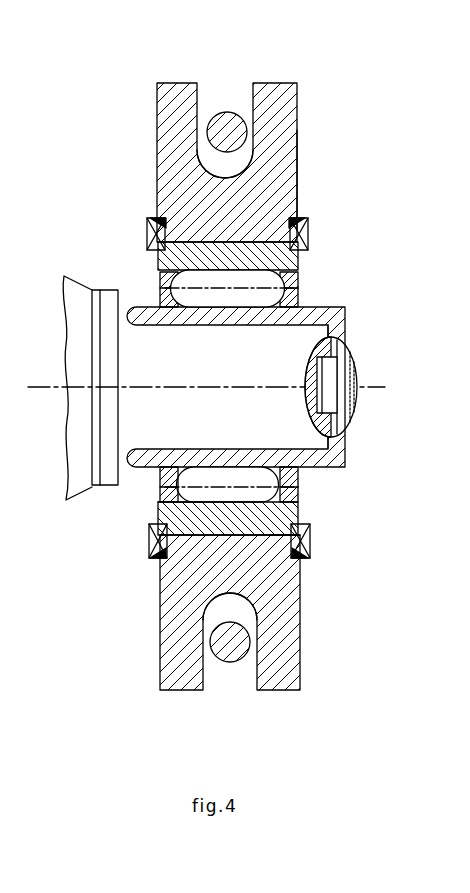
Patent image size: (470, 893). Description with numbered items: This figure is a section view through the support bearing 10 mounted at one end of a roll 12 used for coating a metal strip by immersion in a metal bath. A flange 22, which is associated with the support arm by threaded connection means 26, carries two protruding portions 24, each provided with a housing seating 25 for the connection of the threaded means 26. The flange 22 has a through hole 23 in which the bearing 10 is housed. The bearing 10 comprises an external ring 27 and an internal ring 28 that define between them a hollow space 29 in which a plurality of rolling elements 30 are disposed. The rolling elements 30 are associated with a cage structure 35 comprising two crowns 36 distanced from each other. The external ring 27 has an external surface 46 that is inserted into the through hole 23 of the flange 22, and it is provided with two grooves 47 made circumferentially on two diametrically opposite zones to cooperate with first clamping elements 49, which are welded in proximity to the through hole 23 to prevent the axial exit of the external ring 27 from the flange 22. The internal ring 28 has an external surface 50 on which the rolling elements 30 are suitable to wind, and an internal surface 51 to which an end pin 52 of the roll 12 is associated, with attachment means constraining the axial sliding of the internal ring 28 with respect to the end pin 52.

The support bearing 10 is at (308, 287).
The roll 12 is at (72, 303).
The flange 22 is at (277, 203).
The through hole 23 is at (307, 250).
The protruding portions 24 is at (287, 110).
The housing seating 25 is at (253, 93).
The threaded connection means 26 is at (225, 122).
The external ring 27 is at (183, 287).
The internal ring 28 is at (152, 308).
The hollow space 29 is at (288, 268).
The rolling elements 30 is at (148, 315).
The cage structure 35 is at (161, 501).
The crowns 36 is at (168, 495).
The external surface 46 is at (276, 530).
The grooves 47 is at (180, 255).
The first clamping elements 49 is at (155, 223).
The external surface 50 is at (328, 308).
The internal surface 51 is at (341, 337).
The end pin 52 is at (293, 367).